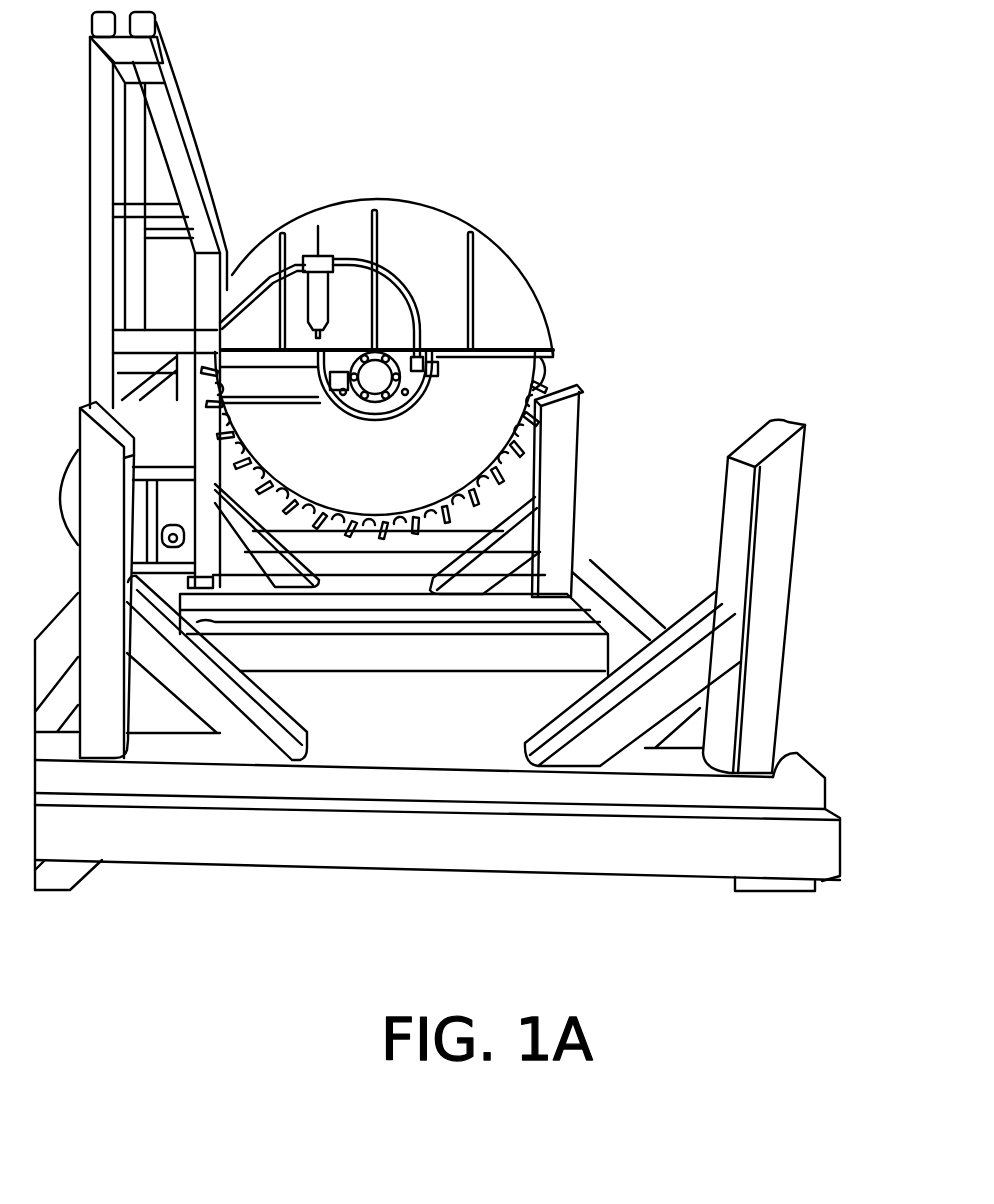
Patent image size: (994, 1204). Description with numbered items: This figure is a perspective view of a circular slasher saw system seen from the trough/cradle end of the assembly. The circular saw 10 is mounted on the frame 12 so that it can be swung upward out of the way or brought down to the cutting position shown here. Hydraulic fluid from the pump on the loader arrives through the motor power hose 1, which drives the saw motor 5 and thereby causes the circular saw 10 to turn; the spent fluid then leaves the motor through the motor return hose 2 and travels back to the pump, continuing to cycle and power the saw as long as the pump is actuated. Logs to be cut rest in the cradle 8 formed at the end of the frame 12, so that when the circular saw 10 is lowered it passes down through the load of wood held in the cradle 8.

The motor power hose 1 is at (222, 346).
The motor return hose 2 is at (403, 278).
The saw motor 5 is at (442, 352).
The cradle 8 is at (766, 546).
The circular saw 10 is at (537, 383).
The frame 12 is at (780, 842).